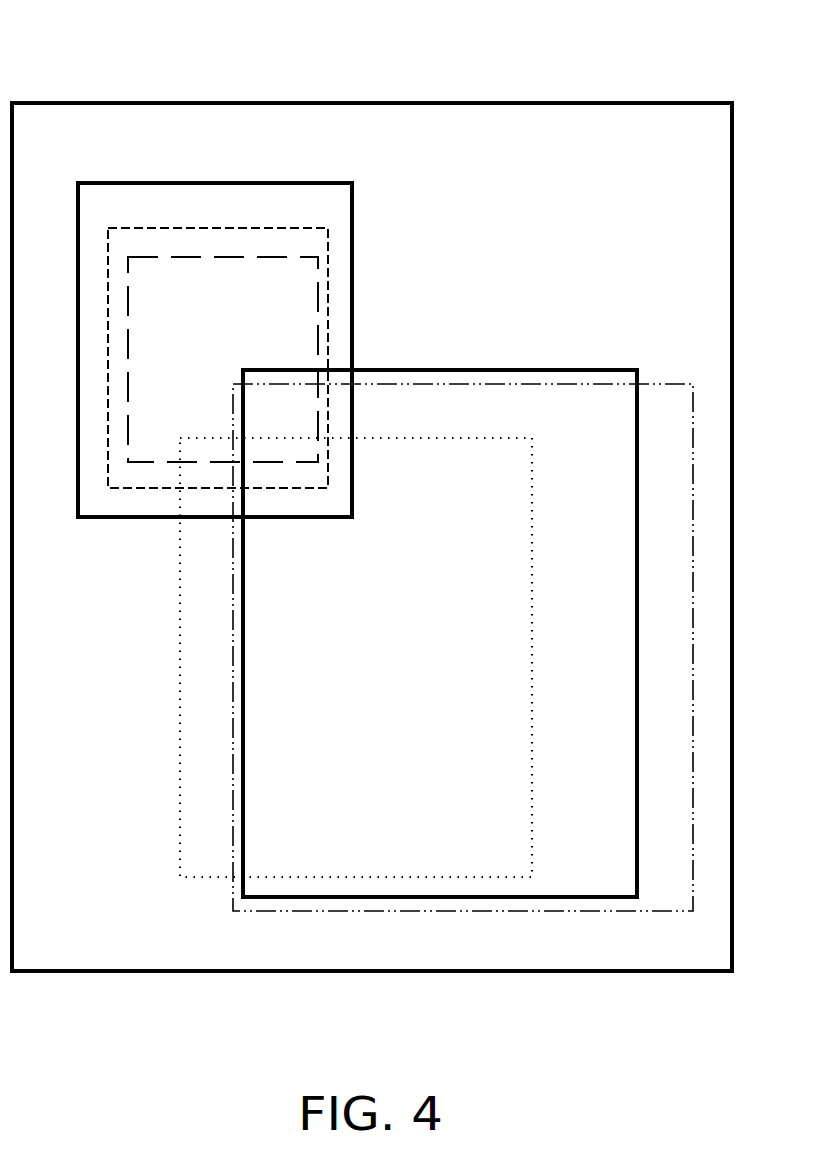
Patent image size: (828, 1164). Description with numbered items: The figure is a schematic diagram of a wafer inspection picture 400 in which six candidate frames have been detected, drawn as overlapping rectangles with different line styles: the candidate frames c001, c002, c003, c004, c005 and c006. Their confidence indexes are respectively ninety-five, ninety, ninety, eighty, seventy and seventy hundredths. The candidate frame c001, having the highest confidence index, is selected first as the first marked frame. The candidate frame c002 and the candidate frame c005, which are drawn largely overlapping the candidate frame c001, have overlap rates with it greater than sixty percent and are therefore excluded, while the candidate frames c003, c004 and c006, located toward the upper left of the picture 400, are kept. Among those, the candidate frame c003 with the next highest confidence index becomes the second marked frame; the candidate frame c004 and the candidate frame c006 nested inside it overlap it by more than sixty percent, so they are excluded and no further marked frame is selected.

The wafer inspection picture 400 is at (553, 973).
The candidate frame c001 is at (557, 369).
The candidate frame c002 is at (419, 384).
The candidate frame c003 is at (275, 183).
The candidate frame c004 is at (148, 228).
The candidate frame c005 is at (180, 727).
The candidate frame c006 is at (148, 462).